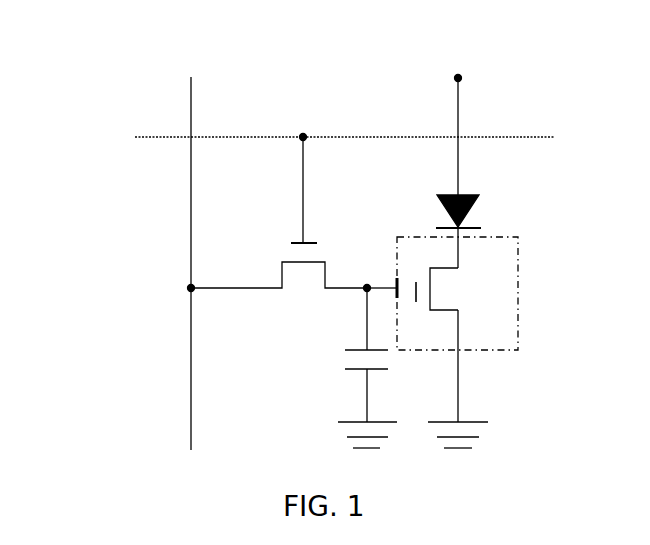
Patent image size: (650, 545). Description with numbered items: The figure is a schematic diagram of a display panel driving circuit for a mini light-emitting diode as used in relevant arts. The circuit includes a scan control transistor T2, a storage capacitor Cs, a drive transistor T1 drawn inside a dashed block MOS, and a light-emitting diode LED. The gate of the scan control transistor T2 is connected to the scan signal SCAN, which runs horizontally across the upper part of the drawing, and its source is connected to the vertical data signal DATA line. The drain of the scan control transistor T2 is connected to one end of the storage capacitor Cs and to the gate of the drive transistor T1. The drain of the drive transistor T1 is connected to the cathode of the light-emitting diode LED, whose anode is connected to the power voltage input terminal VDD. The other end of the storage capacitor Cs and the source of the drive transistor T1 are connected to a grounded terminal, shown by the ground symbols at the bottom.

The data signal DATA is at (189, 245).
The scan signal SCAN is at (306, 138).
The power voltage input terminal VDD is at (461, 118).
The light-emitting diode LED is at (484, 231).
The scan control transistor T2 is at (279, 227).
The storage capacitor Cs is at (351, 368).
The drive transistor block MOS is at (492, 293).
The drive transistor T1 is at (427, 358).